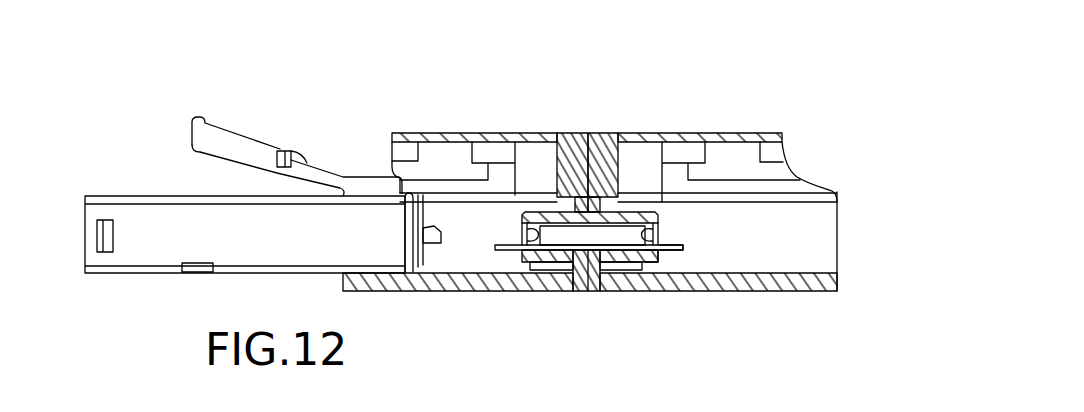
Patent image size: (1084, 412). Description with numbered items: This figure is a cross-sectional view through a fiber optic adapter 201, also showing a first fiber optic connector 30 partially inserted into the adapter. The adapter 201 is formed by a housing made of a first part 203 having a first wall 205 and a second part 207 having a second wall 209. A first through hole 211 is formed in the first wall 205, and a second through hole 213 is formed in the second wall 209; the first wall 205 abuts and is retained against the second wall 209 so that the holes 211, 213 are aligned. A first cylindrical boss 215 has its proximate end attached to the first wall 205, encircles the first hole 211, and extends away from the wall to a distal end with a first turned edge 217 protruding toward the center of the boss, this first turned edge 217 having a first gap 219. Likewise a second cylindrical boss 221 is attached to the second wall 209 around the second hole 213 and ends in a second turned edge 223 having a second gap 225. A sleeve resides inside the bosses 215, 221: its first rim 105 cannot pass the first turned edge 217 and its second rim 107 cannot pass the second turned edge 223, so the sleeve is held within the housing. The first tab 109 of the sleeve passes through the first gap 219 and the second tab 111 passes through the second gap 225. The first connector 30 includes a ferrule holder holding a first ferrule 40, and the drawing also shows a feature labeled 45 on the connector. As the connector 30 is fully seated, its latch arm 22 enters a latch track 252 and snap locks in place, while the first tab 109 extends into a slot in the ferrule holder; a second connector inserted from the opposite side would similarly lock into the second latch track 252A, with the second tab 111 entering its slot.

The first fiber optic connector 30 is at (150, 157).
The latch arm 22 is at (280, 151).
The first ferrule 40 is at (424, 244).
The ferrule contact 45 is at (433, 228).
The fiber optic adapter 201 is at (508, 100).
The first part 203 is at (455, 133).
The first wall 205 is at (577, 211).
The second part 207 is at (686, 133).
The second wall 209 is at (600, 211).
The first through hole 211 is at (557, 252).
The second through hole 213 is at (618, 251).
The first cylindrical boss 215 is at (533, 252).
The first turned edge 217 is at (548, 224).
The first gap 219 is at (518, 251).
The second cylindrical boss 221 is at (628, 253).
The second turned edge 223 is at (647, 238).
The second gap 225 is at (662, 252).
The latch track 252 is at (416, 169).
The second latch track 252A is at (748, 160).
The first rim 105 is at (532, 243).
The second rim 107 is at (655, 230).
The first tab 109 is at (500, 250).
The second tab 111 is at (677, 249).